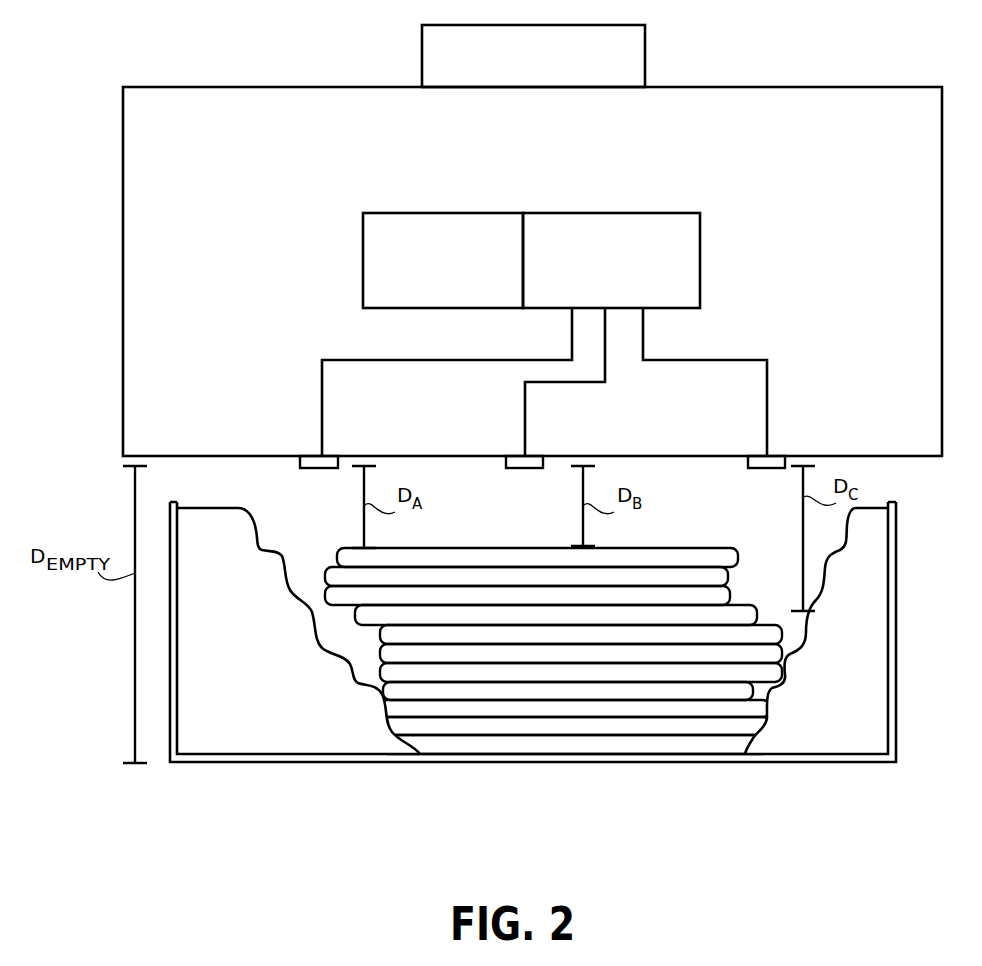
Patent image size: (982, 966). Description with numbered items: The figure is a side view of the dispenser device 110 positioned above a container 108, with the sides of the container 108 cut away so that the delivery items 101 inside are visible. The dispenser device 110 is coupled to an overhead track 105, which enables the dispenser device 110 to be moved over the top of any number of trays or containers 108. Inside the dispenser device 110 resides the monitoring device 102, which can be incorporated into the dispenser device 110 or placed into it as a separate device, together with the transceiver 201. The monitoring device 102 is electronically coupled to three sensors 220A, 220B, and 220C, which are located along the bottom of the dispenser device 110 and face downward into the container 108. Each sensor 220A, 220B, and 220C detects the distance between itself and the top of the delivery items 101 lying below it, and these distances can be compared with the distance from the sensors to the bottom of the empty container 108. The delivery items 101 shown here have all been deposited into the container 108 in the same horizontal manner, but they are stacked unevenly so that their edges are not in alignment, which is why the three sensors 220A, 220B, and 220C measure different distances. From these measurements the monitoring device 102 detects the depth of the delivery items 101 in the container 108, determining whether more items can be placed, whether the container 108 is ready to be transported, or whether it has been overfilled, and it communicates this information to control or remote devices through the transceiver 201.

The overhead track 105 is at (645, 55).
The dispenser device 110 is at (521, 163).
The transceiver 201 is at (429, 283).
The monitoring device 102 is at (592, 298).
The sensor 220A is at (331, 463).
The sensor 220B is at (535, 463).
The sensor 220C is at (773, 463).
The container 108 is at (862, 630).
The delivery items 101 is at (467, 728).